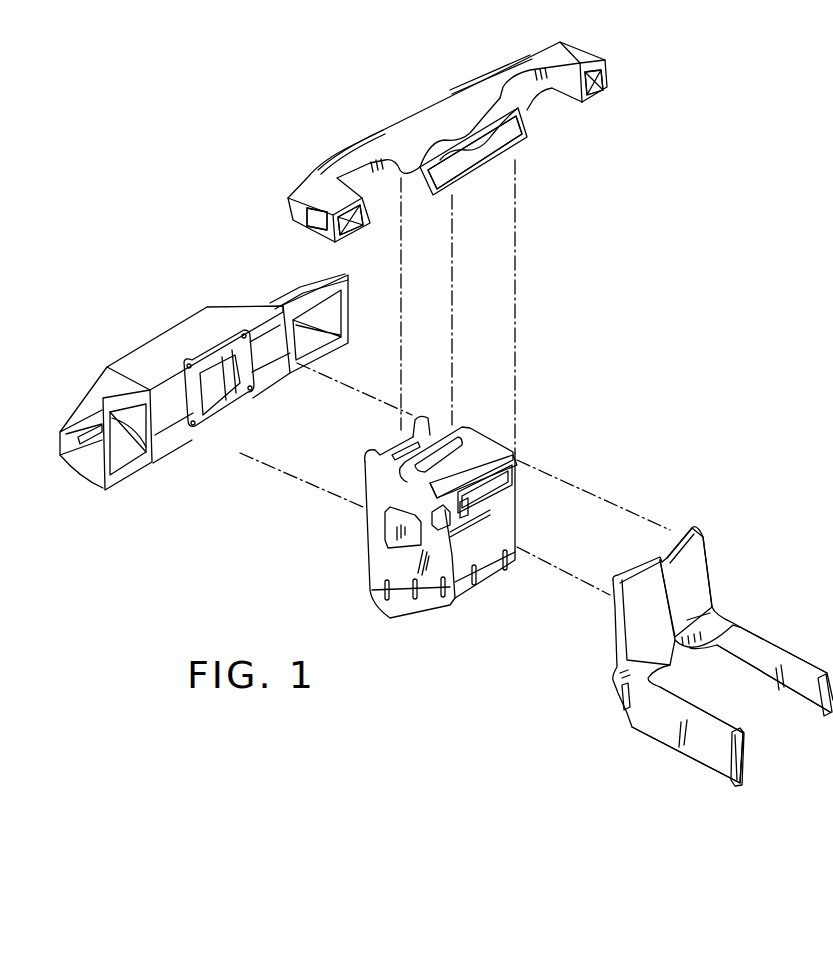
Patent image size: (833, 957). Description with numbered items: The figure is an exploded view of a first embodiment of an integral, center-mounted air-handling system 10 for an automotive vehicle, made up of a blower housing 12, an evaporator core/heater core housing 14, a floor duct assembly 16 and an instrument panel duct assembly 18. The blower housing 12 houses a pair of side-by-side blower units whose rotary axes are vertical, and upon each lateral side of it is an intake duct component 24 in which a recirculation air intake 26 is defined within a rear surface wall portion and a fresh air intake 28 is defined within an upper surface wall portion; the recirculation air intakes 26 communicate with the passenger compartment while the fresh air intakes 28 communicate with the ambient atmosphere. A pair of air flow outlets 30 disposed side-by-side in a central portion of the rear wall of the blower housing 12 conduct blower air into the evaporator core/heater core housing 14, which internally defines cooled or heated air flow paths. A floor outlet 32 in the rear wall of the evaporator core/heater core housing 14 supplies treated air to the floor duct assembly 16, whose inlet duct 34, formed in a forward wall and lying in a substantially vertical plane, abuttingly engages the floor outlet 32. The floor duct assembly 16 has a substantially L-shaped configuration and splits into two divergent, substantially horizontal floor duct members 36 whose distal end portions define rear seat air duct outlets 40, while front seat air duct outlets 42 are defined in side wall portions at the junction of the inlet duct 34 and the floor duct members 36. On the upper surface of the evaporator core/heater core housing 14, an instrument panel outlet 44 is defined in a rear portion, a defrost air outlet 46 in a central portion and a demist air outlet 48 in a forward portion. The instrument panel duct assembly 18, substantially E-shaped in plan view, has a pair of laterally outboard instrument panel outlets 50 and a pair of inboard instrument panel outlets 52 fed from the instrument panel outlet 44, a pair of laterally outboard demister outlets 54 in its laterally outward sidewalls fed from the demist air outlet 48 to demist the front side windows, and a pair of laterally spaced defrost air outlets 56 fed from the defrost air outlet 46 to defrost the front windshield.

The integral, center-mounted air-handling system 10 is at (675, 226).
The blower housing 12 is at (193, 323).
The evaporator core/heater core housing 14 is at (463, 597).
The floor duct assembly 16 is at (695, 558).
The instrument panel duct assembly 18 is at (420, 117).
The intake duct component 24 is at (107, 487).
The recirculation air intake 26 is at (123, 457).
The fresh air intake 28 is at (98, 413).
The air flow outlet 30 is at (233, 378).
The floor outlet 32 is at (493, 495).
The inlet duct 34 is at (675, 535).
The floor duct member 36 is at (687, 743).
The rear seat air duct outlet 40 is at (740, 762).
The front seat air duct outlet 42 is at (620, 700).
The instrument panel outlet 44 is at (515, 452).
The defrost air outlet 46 is at (463, 437).
The demist air outlet 48 is at (423, 423).
The laterally outboard instrument panel outlet 50 is at (363, 221).
The inboard instrument panel outlet 52 is at (503, 147).
The laterally outboard demister outlet 54 is at (292, 226).
The defrost air outlet 56 is at (338, 153).